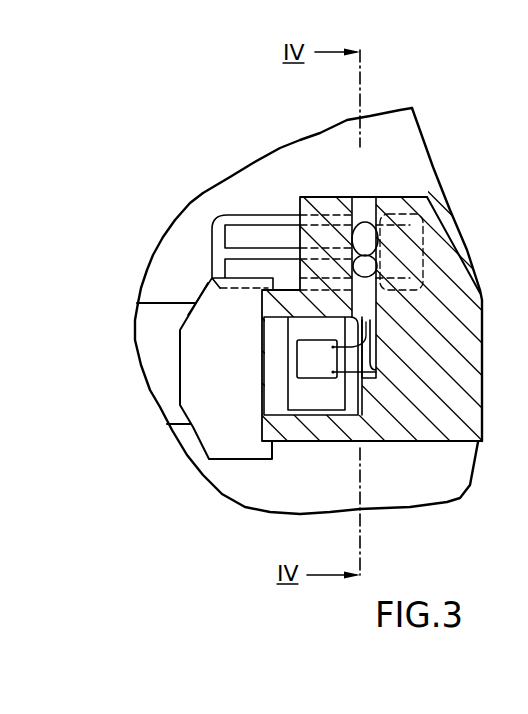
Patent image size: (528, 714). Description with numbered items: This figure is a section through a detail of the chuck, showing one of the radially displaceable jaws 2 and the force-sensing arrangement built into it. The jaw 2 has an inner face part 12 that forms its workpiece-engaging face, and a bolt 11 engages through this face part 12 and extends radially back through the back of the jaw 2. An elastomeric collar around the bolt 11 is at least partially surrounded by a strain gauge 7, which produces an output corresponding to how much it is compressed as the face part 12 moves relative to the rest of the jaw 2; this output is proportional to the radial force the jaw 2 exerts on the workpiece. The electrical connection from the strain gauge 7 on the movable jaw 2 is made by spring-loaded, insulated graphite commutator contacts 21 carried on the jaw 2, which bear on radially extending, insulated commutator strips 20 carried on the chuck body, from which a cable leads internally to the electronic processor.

The jaw 2 is at (470, 387).
The strain gauge 7 is at (317, 353).
The bolt 11 is at (278, 400).
The inner face part 12 is at (212, 431).
The commutator strips 20 is at (243, 265).
The commutator contacts 21 is at (372, 270).